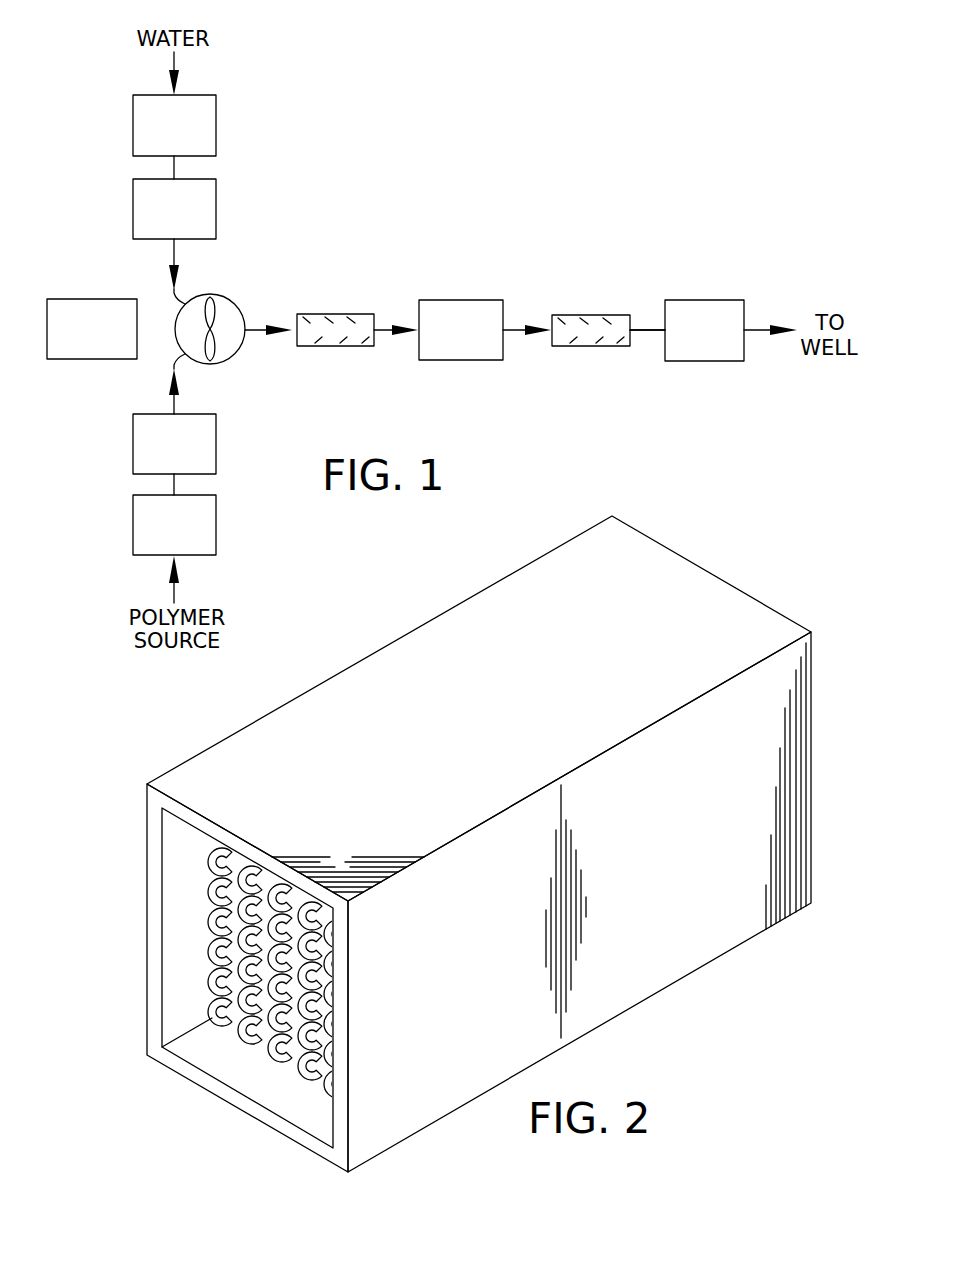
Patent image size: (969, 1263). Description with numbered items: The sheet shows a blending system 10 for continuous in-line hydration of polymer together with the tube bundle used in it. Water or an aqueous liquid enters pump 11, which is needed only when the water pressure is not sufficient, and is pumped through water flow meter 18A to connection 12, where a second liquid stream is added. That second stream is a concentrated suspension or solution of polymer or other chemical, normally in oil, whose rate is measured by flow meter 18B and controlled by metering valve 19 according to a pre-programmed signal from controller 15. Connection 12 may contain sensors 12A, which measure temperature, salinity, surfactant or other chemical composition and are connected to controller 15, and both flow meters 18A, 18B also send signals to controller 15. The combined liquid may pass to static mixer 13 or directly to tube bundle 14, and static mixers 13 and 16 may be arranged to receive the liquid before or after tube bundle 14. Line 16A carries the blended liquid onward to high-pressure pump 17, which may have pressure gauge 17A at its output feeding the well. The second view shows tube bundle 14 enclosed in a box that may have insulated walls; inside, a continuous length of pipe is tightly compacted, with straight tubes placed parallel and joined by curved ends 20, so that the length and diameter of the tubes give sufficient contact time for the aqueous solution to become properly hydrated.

In FIG. 1, the blending system 10 is at (440, 160).
In FIG. 1, the pump 11 is at (216, 124).
In FIG. 1, the connection 12 is at (243, 304).
In FIG. 1, the sensors 12A is at (188, 328).
In FIG. 1, the static mixer 13 is at (329, 347).
In FIG. 1, the tube bundle 14 is at (469, 300).
In FIG. 2, the tube bundle 14 is at (482, 674).
In FIG. 1, the controller 15 is at (73, 341).
In FIG. 1, the static mixer 16 is at (590, 315).
In FIG. 1, the line 16A is at (643, 332).
In FIG. 1, the high-pressure pump 17 is at (704, 300).
In FIG. 1, the pressure gauge 17A is at (751, 328).
In FIG. 1, the water flow meter 18A is at (216, 208).
In FIG. 1, the flow meter 18B is at (216, 442).
In FIG. 1, the metering valve 19 is at (216, 525).
In FIG. 2, the curved ends 20 is at (213, 972).